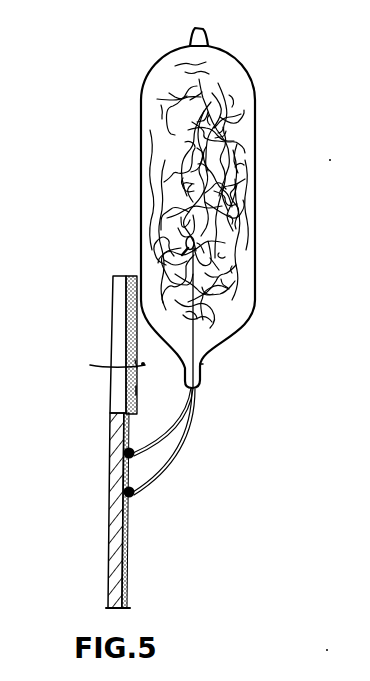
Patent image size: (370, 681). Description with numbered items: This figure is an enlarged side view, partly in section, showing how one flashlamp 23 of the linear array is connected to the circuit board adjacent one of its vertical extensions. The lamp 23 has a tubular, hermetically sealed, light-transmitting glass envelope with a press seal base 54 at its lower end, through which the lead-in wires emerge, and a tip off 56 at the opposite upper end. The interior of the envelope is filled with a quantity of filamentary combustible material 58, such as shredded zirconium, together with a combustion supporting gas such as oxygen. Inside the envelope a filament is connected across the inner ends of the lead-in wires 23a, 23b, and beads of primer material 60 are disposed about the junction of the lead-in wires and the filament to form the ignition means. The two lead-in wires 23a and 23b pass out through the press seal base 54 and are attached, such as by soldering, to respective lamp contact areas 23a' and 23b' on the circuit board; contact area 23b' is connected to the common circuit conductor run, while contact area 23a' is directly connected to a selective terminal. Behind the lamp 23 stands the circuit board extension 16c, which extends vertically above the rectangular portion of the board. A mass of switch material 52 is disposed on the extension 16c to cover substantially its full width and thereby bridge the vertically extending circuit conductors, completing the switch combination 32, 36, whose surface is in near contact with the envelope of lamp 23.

The tip off 56 is at (205, 36).
The flashlamp 23 is at (217, 95).
The filamentary combustible material 58 is at (227, 157).
The primer material 60 is at (194, 245).
The press seal base 54 is at (203, 366).
The circuit board extension 16c is at (116, 297).
The switch 32 is at (91, 355).
The switch 36 is at (136, 364).
The switch material 52 is at (135, 387).
The lead-in wire 23b is at (163, 422).
The lead-in wire 23a is at (185, 441).
The lamp contact area 23b' is at (100, 454).
The lamp contact area 23a' is at (168, 488).